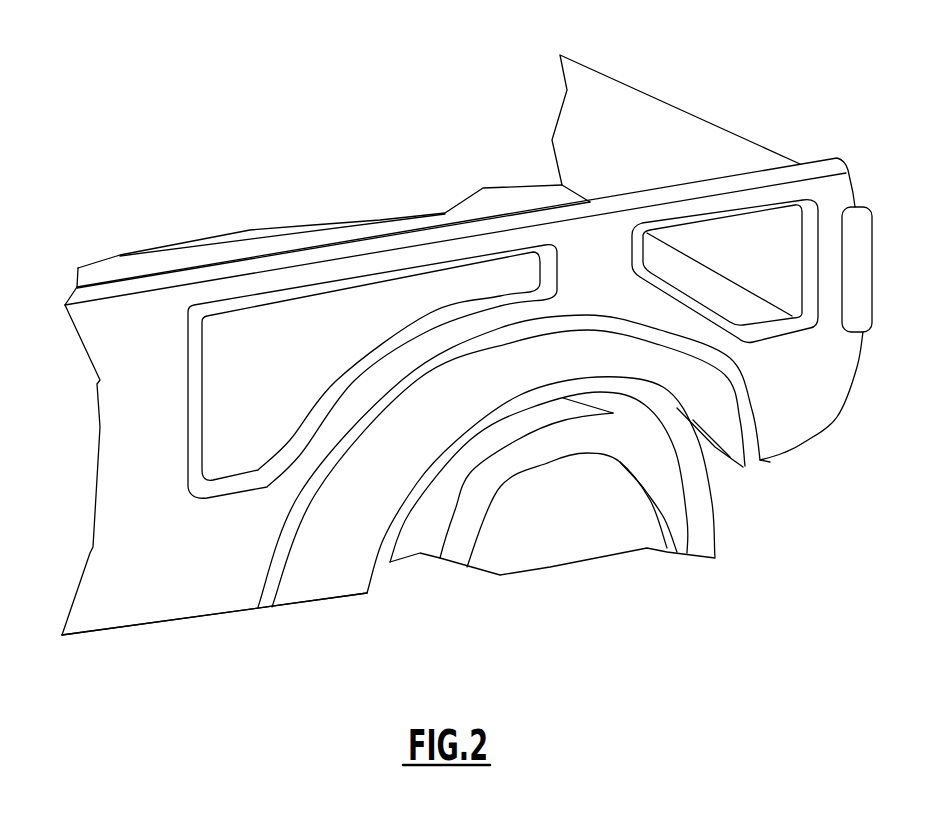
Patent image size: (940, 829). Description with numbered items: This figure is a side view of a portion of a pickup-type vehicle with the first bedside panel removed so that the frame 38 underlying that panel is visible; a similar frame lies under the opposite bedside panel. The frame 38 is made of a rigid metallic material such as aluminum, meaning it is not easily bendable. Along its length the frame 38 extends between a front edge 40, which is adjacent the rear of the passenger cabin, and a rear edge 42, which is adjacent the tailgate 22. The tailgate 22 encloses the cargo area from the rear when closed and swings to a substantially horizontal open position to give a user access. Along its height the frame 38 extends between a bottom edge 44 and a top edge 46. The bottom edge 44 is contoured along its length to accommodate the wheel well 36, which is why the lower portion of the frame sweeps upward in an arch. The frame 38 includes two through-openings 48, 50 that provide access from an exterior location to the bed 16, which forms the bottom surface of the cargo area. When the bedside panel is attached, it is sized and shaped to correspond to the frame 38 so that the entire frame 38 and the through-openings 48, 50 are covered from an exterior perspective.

The bed 16 is at (502, 203).
The tailgate 22 is at (693, 130).
The wheel well 36 is at (727, 467).
The frame 38 is at (157, 273).
The front edge 40 is at (90, 370).
The rear edge 42 is at (853, 193).
The bottom edge 44 is at (163, 620).
The top edge 46 is at (377, 243).
The through-opening 48 is at (339, 338).
The through-opening 50 is at (766, 266).